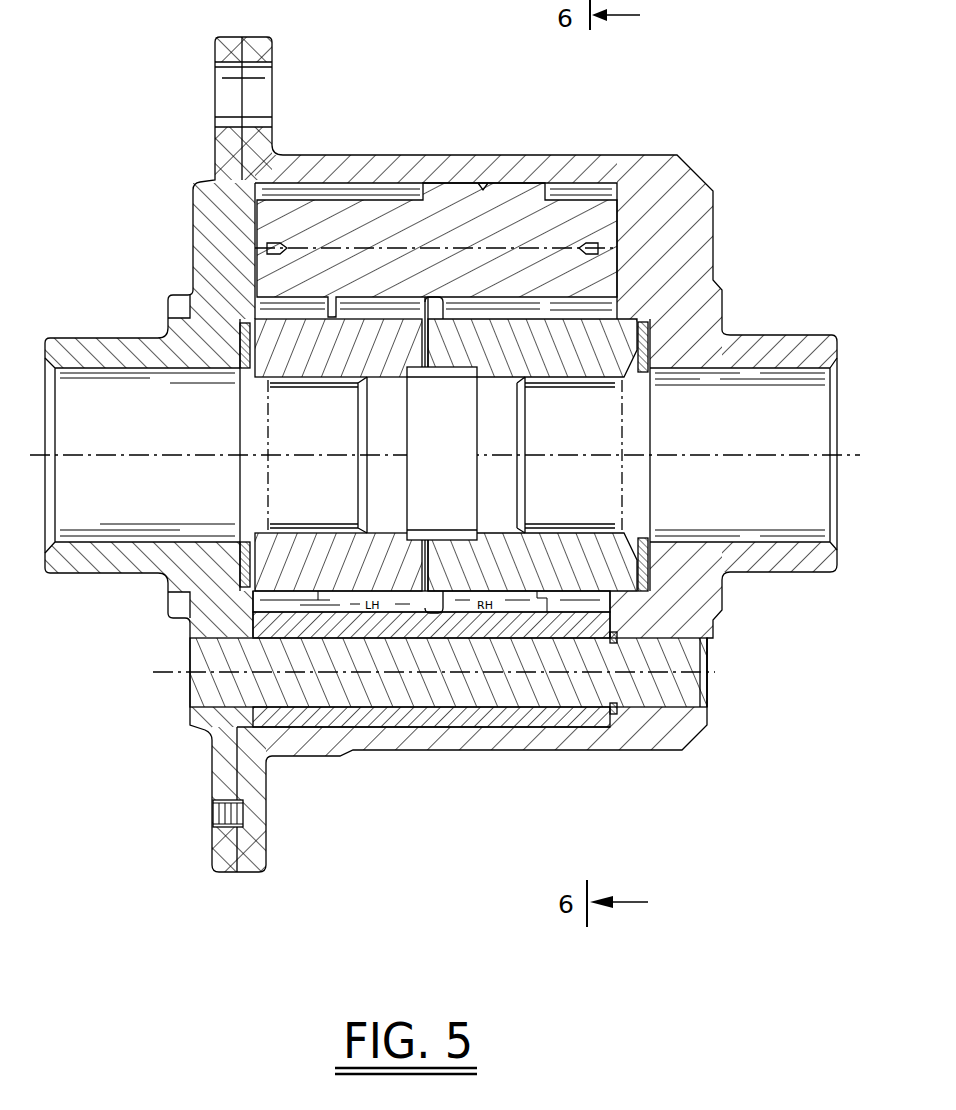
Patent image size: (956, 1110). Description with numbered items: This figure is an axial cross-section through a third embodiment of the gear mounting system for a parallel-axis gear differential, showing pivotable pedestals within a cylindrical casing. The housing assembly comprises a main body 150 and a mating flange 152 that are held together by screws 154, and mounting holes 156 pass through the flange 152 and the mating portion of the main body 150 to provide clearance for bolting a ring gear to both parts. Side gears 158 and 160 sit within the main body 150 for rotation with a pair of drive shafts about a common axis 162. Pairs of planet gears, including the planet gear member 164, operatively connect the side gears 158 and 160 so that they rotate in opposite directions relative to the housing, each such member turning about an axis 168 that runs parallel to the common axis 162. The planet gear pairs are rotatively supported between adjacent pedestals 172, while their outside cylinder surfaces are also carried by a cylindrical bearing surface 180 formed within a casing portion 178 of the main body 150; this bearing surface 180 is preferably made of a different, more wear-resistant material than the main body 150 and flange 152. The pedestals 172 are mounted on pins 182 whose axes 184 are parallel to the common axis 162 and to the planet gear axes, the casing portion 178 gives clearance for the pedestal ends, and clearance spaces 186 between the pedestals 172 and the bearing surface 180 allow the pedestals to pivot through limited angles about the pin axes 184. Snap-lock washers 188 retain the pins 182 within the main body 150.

The main body 150 is at (678, 190).
The mating flange 152 is at (212, 250).
The screws 154 is at (247, 827).
The mounting holes 156 is at (265, 66).
The side gear 158 is at (320, 365).
The side gear 160 is at (547, 357).
The common axis 162 is at (702, 455).
The planet gear member 164 is at (465, 220).
The planet gear axis 168 is at (625, 247).
The pedestals 172 is at (480, 713).
The casing portion 178 is at (353, 163).
The cylindrical bearing surface 180 is at (505, 177).
The pins 182 is at (207, 688).
The pin axis 184 is at (722, 675).
The clearance spaces 186 is at (345, 755).
The snap-lock washers 188 is at (613, 713).